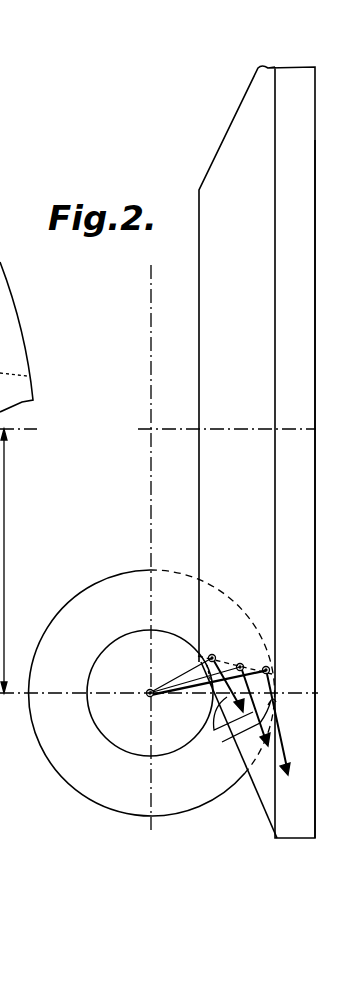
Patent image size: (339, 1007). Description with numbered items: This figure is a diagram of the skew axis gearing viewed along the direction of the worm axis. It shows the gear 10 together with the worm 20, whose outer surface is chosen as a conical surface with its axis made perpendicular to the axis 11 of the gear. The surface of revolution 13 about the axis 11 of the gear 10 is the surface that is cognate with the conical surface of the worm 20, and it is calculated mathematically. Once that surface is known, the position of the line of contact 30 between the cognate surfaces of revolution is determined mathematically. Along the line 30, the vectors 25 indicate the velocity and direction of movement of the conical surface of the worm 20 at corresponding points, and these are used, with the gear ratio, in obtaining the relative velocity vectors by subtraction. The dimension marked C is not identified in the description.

The gear 10 is at (210, 364).
The axis of the gear 11 is at (292, 428).
The surface of revolution 13 is at (258, 792).
The worm 20 is at (110, 587).
The vectors 25 is at (238, 746).
The line of contact 30 is at (236, 645).
The dimension C is at (7, 561).